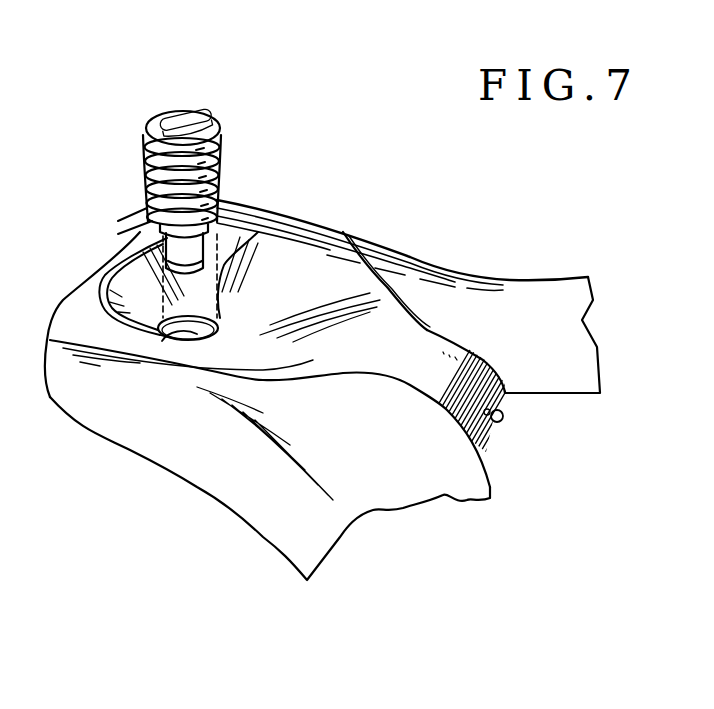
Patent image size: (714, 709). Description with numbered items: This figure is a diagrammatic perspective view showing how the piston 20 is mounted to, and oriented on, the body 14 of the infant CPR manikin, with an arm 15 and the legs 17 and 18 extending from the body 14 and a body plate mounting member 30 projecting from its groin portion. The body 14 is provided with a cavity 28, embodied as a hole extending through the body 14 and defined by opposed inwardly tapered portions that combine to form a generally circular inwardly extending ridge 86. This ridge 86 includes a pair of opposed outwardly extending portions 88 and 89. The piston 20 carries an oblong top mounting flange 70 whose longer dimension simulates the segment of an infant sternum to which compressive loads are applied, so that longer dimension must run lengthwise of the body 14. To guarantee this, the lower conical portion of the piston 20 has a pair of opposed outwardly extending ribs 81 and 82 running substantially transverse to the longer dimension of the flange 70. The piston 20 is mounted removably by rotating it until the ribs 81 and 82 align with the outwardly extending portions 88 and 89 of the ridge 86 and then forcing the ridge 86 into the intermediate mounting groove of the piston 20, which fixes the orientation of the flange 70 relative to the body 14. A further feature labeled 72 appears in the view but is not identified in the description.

The body 14 is at (365, 240).
The arm 15 is at (219, 232).
The leg 17 is at (545, 278).
The leg 18 is at (490, 478).
The piston 20 is at (213, 120).
The cavity 28 is at (307, 310).
The body plate mounting member 30 is at (503, 418).
The top mounting flange 70 is at (180, 117).
The hidden shank portion 72 is at (253, 240).
The rib 81 is at (247, 240).
The rib 82 is at (150, 228).
The inwardly extending ridge 86 is at (160, 338).
The outwardly extending portion 88 is at (222, 325).
The outwardly extending portion 89 is at (193, 335).